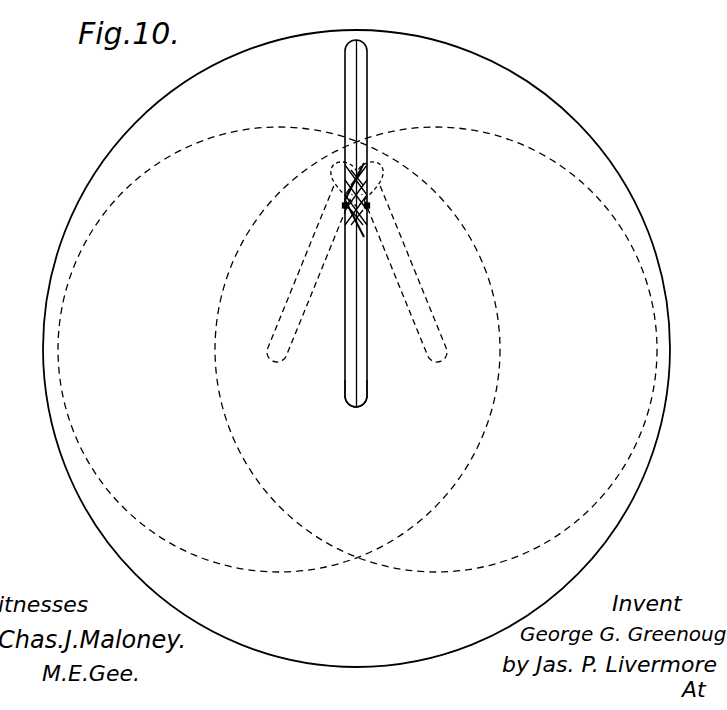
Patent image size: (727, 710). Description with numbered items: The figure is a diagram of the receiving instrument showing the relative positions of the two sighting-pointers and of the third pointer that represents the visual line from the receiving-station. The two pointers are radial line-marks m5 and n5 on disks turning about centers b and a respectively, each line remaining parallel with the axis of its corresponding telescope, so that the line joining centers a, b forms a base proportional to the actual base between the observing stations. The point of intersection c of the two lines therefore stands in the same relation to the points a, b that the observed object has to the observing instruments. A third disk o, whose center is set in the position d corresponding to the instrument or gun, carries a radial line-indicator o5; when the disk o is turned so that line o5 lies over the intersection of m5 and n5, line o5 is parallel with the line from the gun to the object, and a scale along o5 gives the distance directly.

The third disk o is at (601, 161).
The radial line-indicator o5 is at (357, 89).
The point of intersection of the pointers c is at (347, 206).
The radial line-mark n5 is at (345, 206).
The radial line-mark m5 is at (367, 206).
The center of rotation of the first pointer a is at (279, 354).
The center of rotation of the second pointer b is at (437, 354).
The point representing the receiving-station d is at (356, 408).